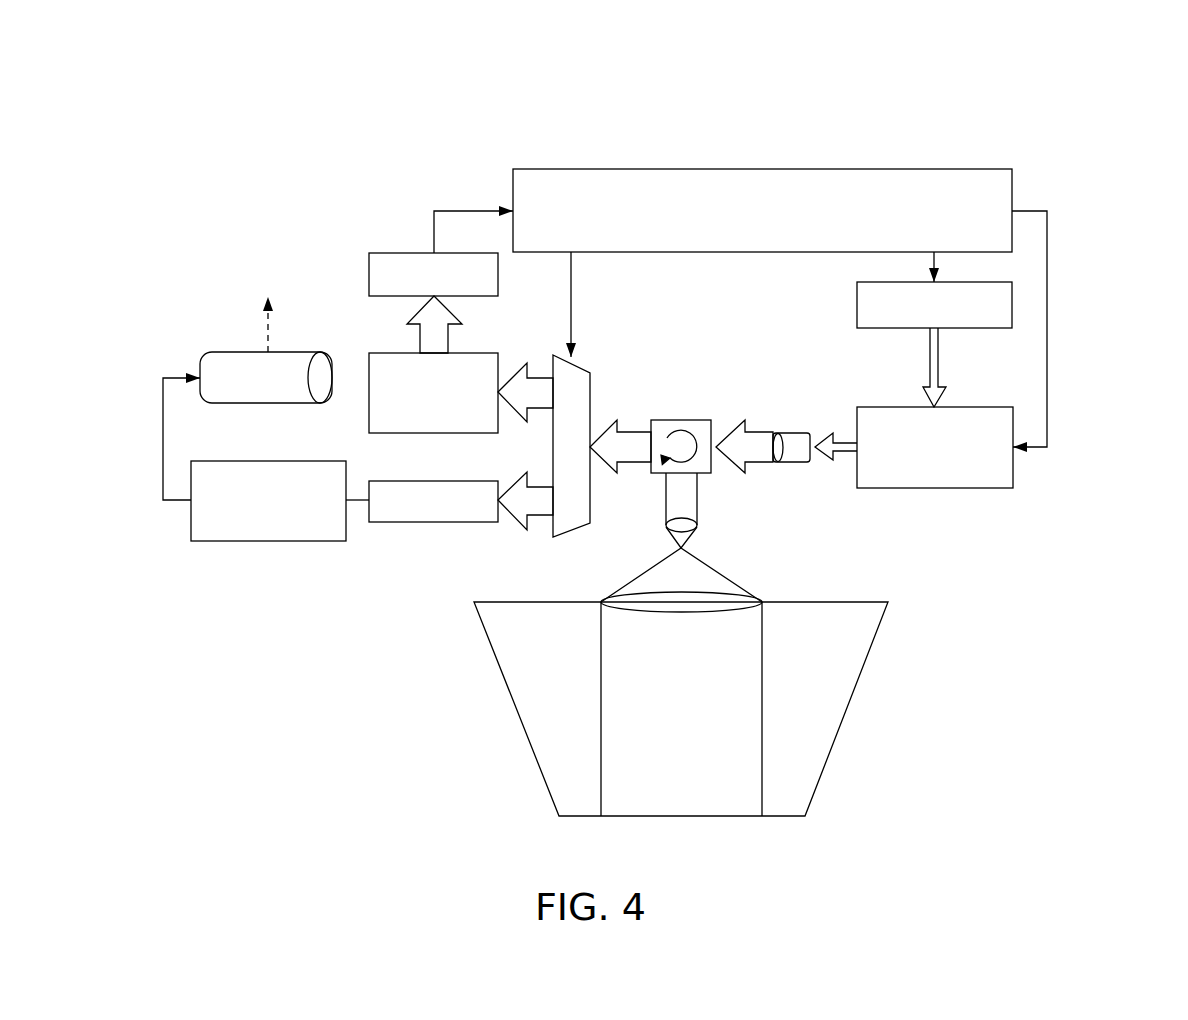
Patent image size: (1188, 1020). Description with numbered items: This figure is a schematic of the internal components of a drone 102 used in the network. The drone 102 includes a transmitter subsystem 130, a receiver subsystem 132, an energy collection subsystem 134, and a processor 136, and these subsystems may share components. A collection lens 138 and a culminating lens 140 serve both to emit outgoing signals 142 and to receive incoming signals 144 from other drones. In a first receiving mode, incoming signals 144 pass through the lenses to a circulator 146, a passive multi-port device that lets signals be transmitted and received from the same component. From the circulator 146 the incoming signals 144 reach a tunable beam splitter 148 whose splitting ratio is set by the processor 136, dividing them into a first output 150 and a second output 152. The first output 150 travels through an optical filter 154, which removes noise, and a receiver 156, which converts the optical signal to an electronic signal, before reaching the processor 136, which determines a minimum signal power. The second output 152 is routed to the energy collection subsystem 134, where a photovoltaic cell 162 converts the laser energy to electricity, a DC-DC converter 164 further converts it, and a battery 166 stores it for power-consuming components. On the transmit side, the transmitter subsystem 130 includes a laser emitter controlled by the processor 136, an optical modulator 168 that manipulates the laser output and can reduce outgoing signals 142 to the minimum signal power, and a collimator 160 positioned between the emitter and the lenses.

The drone 102 is at (942, 62).
The transmitter subsystem 130 is at (990, 535).
The receiver subsystem 132 is at (603, 392).
The energy collection subsystem 134 is at (307, 585).
The processor 136 is at (968, 169).
The collection lens 138 is at (732, 592).
The culminating lens 140 is at (700, 527).
The outgoing signals 142 is at (762, 773).
The incoming signals 144 is at (846, 712).
The circulator 146 is at (681, 420).
The tunable beam splitter 148 is at (591, 375).
The first output 150 is at (537, 378).
The second output 152 is at (542, 530).
The optical filter 154 is at (378, 353).
The receiver 156 is at (395, 253).
The collimator 160 is at (795, 433).
The photovoltaic cell 162 is at (415, 522).
The DC-DC converter 164 is at (200, 541).
The battery 166 is at (217, 352).
The optical modulator 168 is at (1013, 468).